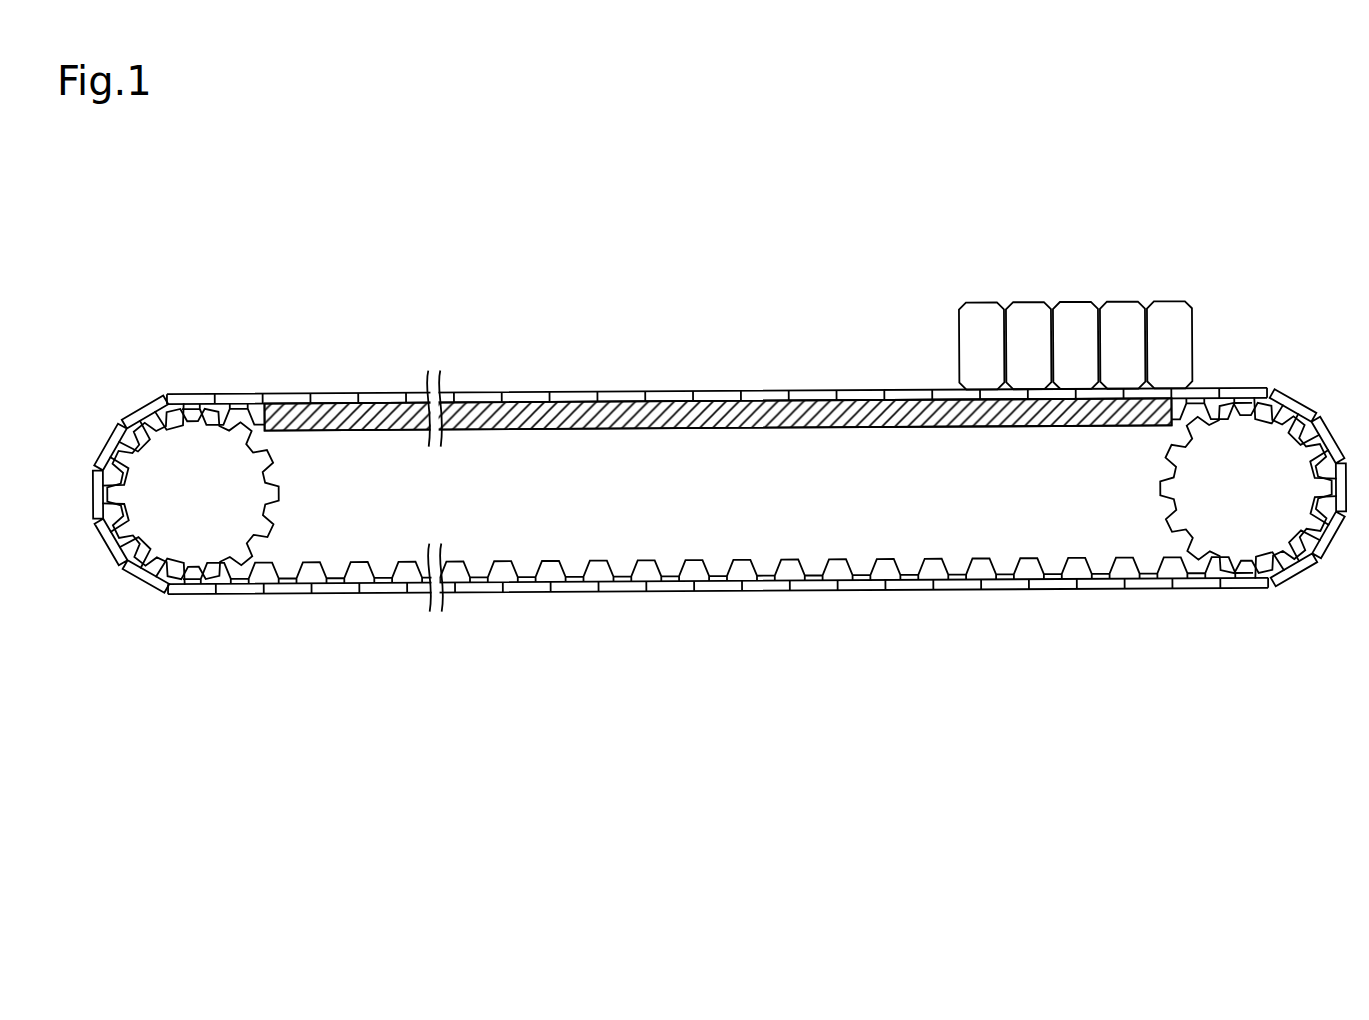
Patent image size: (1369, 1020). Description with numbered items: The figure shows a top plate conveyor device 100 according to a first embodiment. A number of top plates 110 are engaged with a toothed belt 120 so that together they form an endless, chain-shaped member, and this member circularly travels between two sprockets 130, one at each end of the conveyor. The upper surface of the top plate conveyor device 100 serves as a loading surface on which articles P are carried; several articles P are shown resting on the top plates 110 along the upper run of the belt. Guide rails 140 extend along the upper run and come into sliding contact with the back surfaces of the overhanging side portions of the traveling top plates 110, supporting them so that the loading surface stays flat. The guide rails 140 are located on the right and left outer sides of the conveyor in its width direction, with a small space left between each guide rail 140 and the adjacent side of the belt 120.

The top plate conveyor device 100 is at (783, 292).
The top plates 110 is at (622, 398).
The toothed belt 120 is at (748, 570).
The sprockets 130 is at (173, 454).
The guide rails 140 is at (522, 408).
The articles P is at (1183, 330).